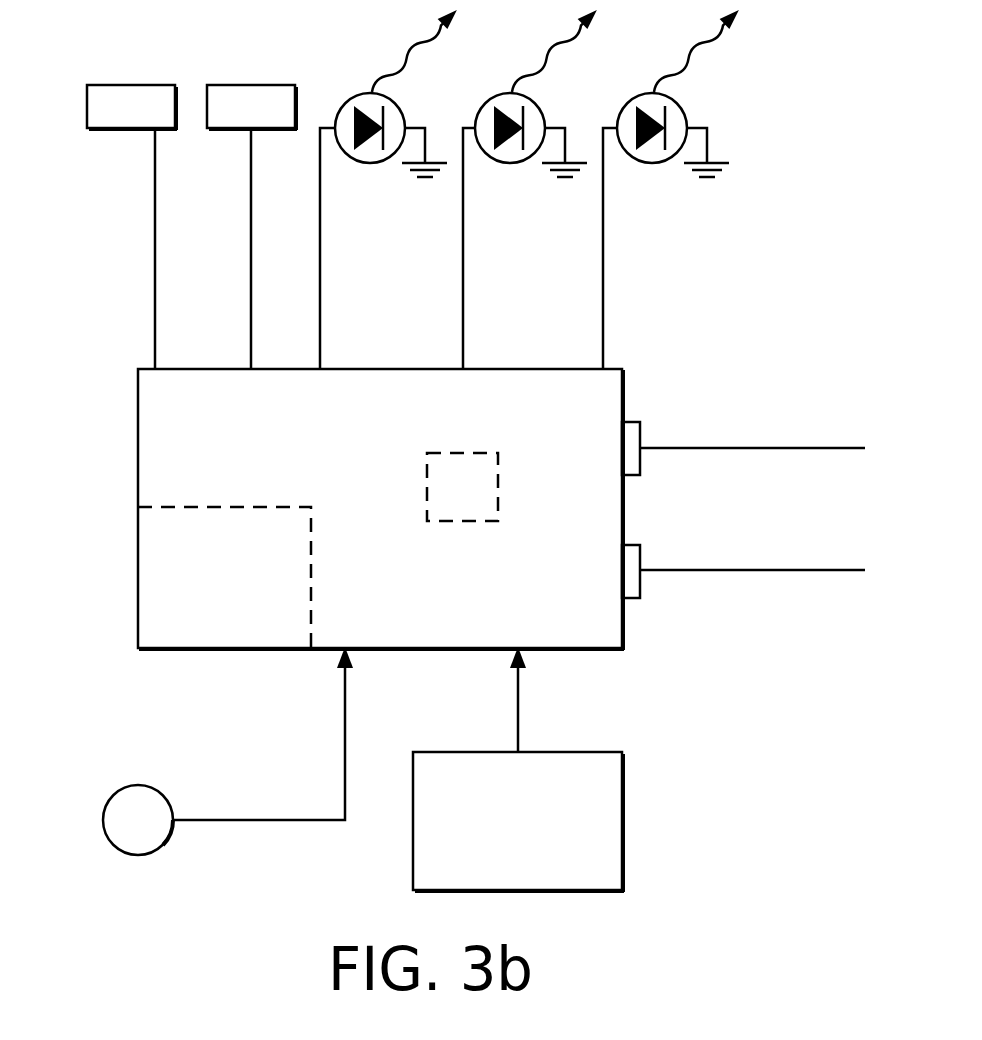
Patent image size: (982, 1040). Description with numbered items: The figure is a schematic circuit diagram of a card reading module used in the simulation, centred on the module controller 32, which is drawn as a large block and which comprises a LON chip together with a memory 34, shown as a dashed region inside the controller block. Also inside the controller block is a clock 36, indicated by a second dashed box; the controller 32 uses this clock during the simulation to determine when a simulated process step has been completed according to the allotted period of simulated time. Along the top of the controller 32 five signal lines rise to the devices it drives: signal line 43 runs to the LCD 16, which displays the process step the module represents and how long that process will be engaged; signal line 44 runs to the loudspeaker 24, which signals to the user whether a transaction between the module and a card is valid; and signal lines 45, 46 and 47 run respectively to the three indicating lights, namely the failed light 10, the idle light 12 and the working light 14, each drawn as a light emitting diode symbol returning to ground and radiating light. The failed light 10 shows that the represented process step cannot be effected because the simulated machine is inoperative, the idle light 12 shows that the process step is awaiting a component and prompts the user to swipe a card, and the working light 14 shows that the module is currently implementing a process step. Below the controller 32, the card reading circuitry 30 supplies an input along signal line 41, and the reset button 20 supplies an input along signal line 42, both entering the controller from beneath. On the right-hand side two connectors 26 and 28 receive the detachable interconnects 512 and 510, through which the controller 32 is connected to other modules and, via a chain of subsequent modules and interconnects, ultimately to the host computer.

The failed light 10 is at (375, 163).
The idle light 12 is at (515, 163).
The working light 14 is at (657, 163).
The LCD 16 is at (118, 84).
The reset button 20 is at (152, 788).
The loudspeaker 24 is at (241, 84).
The connector 26 is at (642, 430).
The connector 28 is at (642, 590).
The card reading circuitry 30 is at (534, 836).
The module controller 32 is at (137, 420).
The memory 34 is at (240, 593).
The clock 36 is at (478, 502).
The signal line 41 is at (518, 706).
The signal line 42 is at (345, 695).
The signal line 43 is at (155, 308).
The signal line 44 is at (251, 308).
The signal line 45 is at (320, 308).
The signal line 46 is at (463, 308).
The signal line 47 is at (603, 308).
The interconnect 510 is at (816, 572).
The interconnect 512 is at (818, 446).